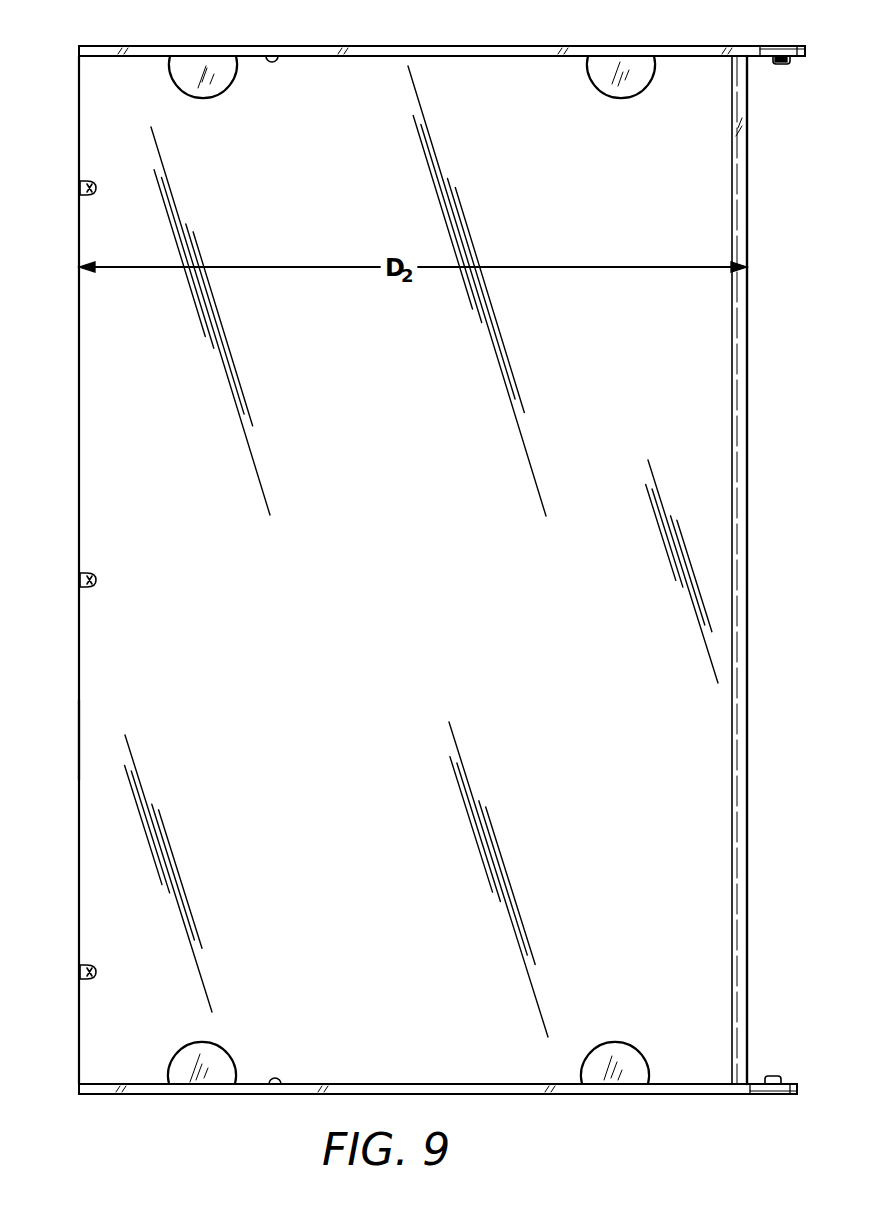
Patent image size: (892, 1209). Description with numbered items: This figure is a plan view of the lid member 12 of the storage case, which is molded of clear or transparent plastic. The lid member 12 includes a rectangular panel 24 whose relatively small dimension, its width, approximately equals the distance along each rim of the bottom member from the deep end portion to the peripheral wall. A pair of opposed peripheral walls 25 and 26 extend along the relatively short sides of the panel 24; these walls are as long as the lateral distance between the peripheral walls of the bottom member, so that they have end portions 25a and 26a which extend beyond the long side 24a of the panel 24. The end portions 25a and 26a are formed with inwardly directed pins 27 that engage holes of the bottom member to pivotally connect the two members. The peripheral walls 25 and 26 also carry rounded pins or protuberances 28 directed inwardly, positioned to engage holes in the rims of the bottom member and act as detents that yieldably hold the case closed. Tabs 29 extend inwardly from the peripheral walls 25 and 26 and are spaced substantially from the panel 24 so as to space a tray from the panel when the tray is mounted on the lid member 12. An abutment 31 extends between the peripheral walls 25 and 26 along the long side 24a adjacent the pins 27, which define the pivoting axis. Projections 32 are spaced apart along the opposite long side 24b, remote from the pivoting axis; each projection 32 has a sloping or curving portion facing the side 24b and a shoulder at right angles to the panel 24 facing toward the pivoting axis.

The lid member 12 is at (73, 423).
The panel 24 is at (78, 739).
The long side of the panel 24a is at (800, 422).
The long side of the panel 24b is at (78, 634).
The peripheral wall 25 is at (302, 46).
The end portion 25a is at (815, 42).
The peripheral wall 26 is at (521, 1096).
The end portion 26a is at (810, 1132).
The pin 27 is at (784, 67).
The rounded pin or protuberance 28 is at (270, 58).
The tab 29 is at (216, 92).
The abutment 31 is at (742, 510).
The projection 32 is at (78, 189).